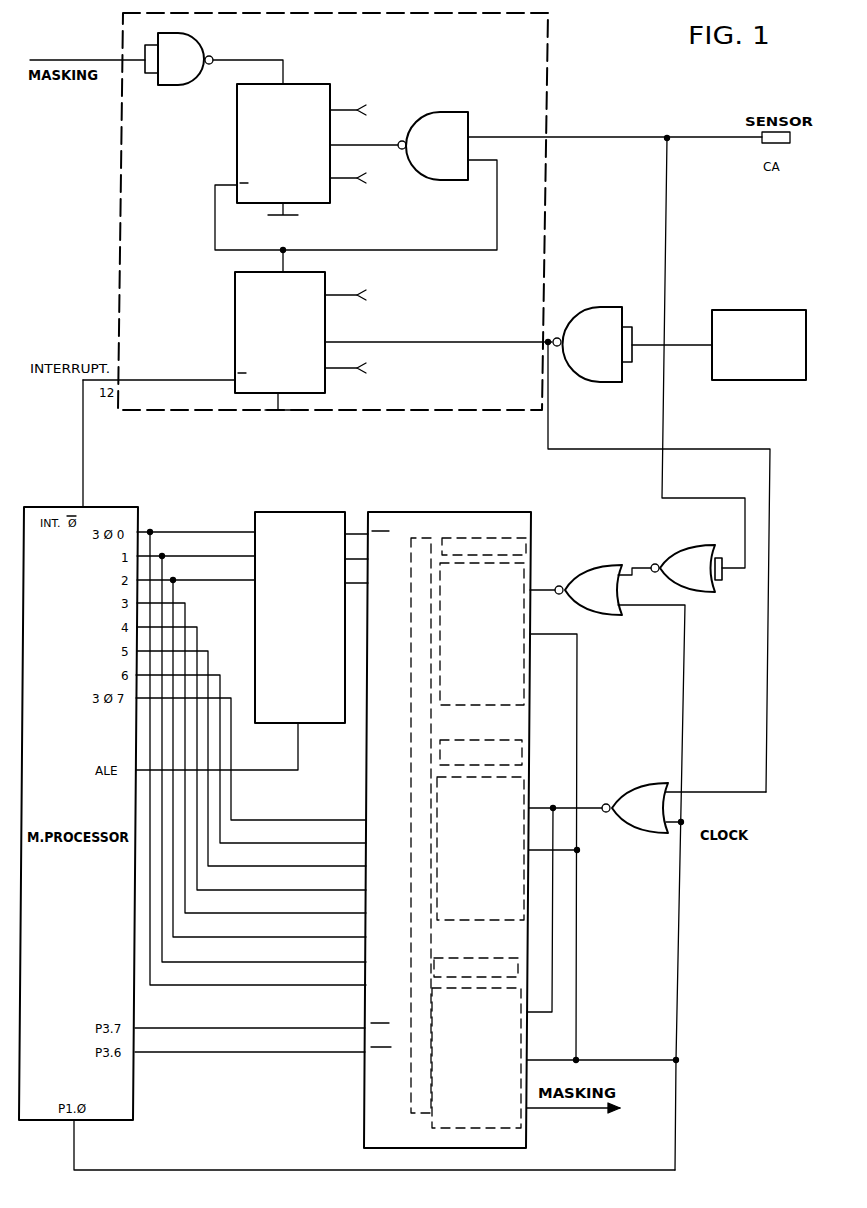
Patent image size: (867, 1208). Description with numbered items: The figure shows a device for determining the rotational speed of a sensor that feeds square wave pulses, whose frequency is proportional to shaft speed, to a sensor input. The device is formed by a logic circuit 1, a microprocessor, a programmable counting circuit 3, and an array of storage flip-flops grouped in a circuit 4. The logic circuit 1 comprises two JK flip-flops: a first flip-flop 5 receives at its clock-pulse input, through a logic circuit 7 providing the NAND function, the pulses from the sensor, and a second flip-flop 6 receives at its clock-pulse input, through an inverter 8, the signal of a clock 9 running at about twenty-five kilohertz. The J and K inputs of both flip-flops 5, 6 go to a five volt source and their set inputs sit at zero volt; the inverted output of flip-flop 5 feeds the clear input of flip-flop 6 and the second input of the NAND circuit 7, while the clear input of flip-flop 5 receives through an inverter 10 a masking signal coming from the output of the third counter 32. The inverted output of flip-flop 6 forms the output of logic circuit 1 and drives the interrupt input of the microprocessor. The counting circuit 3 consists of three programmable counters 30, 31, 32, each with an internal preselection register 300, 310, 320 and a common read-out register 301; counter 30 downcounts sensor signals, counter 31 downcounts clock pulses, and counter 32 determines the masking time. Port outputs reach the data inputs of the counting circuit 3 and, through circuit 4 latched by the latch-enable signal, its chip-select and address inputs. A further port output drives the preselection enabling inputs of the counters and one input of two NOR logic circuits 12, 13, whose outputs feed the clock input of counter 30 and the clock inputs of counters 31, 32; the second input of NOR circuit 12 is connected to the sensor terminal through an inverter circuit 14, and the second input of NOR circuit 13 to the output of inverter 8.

The logic circuit 1 is at (553, 92).
The programmable counting circuit 3 is at (449, 812).
The circuit of storage flip-flops 4 is at (312, 512).
The first flip-flop 5 is at (237, 130).
The second flip-flop 6 is at (235, 298).
The NAND logic circuit 7 is at (448, 113).
The inverter 8 is at (587, 307).
The clock 9 is at (757, 310).
The inverter 10 is at (190, 48).
The NOR logic circuit 12 is at (590, 568).
The NOR logic circuit 13 is at (648, 785).
The inverter circuit 14 is at (680, 548).
The programmable counter 30 is at (505, 662).
The programmable counter 31 is at (465, 895).
The programmable counter 32 is at (498, 1085).
The internal preselection register 300 is at (540, 522).
The common read-out register 301 is at (410, 818).
The internal preselection register 310 is at (524, 752).
The internal preselection register 320 is at (508, 955).